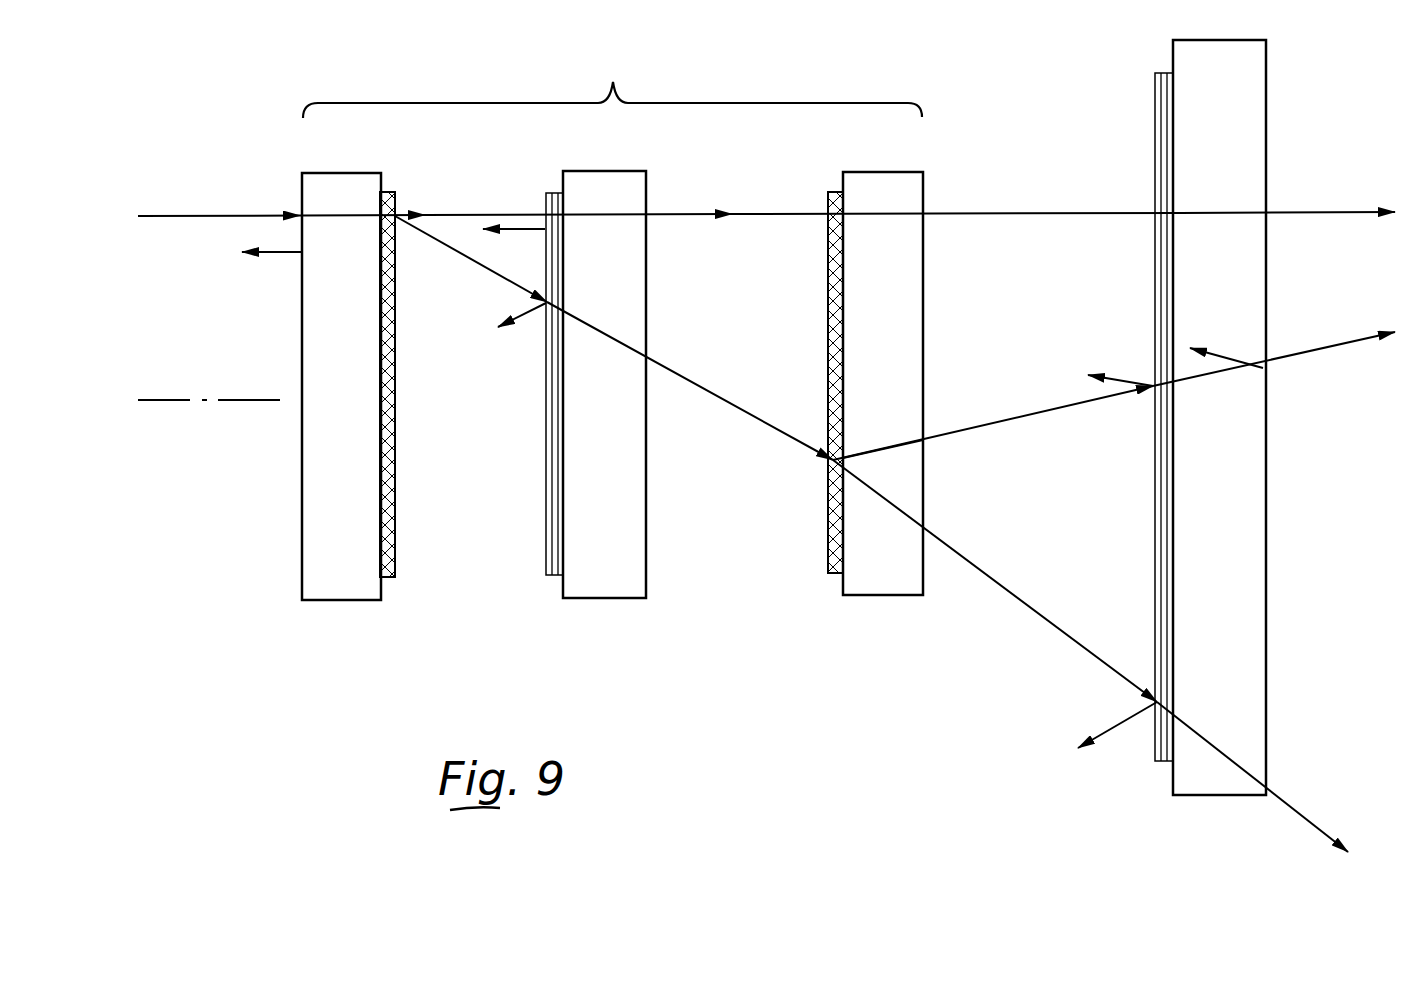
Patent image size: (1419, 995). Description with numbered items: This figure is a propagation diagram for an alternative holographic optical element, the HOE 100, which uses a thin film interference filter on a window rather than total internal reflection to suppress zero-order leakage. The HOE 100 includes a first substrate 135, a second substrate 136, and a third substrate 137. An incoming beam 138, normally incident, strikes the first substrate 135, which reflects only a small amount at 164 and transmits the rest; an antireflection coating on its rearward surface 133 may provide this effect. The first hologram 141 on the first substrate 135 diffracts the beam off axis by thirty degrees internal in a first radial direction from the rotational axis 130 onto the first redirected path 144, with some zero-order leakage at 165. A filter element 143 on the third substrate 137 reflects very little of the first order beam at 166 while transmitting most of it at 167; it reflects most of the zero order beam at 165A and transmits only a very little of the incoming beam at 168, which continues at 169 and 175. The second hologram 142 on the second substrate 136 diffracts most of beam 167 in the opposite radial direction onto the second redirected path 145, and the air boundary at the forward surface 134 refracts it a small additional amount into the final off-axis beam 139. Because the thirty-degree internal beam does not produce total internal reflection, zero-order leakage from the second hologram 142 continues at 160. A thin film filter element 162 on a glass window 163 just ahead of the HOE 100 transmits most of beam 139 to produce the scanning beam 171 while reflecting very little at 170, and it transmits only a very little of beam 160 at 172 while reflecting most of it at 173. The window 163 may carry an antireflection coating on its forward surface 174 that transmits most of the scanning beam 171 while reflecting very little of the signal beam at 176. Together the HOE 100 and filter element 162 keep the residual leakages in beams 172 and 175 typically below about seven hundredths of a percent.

The HOE 100 is at (612, 78).
The rotational axis 130 is at (246, 401).
The rearward surface 133 is at (302, 548).
The forward surface 134 is at (923, 570).
The first substrate 135 is at (322, 602).
The second substrate 136 is at (880, 597).
The third substrate 137 is at (620, 600).
The incoming beam 138 is at (242, 214).
The beam 139 is at (1028, 419).
The first hologram 141 is at (390, 578).
The second hologram 142 is at (830, 576).
The filter element 143 is at (550, 578).
The first redirected path 144 is at (487, 273).
The second redirected path 145 is at (895, 446).
The zero-order leakage beam 160 is at (1068, 634).
The thin film filter element 162 is at (1160, 762).
The glass window 163 is at (1215, 797).
The reflected beam 164 is at (276, 257).
The zero-order leakage 165 is at (512, 175).
The reflected zero order beam 165A is at (530, 228).
The reflected first order beam 166 is at (528, 318).
The transmitted first order beam 167 is at (705, 388).
The transmitted incoming beam 168 is at (670, 213).
The continuing transmitted beam 169 is at (997, 213).
The reflected beam 170 is at (1122, 375).
The scanning beam 171 is at (1337, 350).
The residual zero-order leakage beam 172 is at (1293, 810).
The reflected zero-order beam 173 is at (1120, 722).
The forward surface 174 is at (1267, 540).
The residual zero-order leakage beam 175 is at (1332, 212).
The reflected signal beam 176 is at (1238, 358).